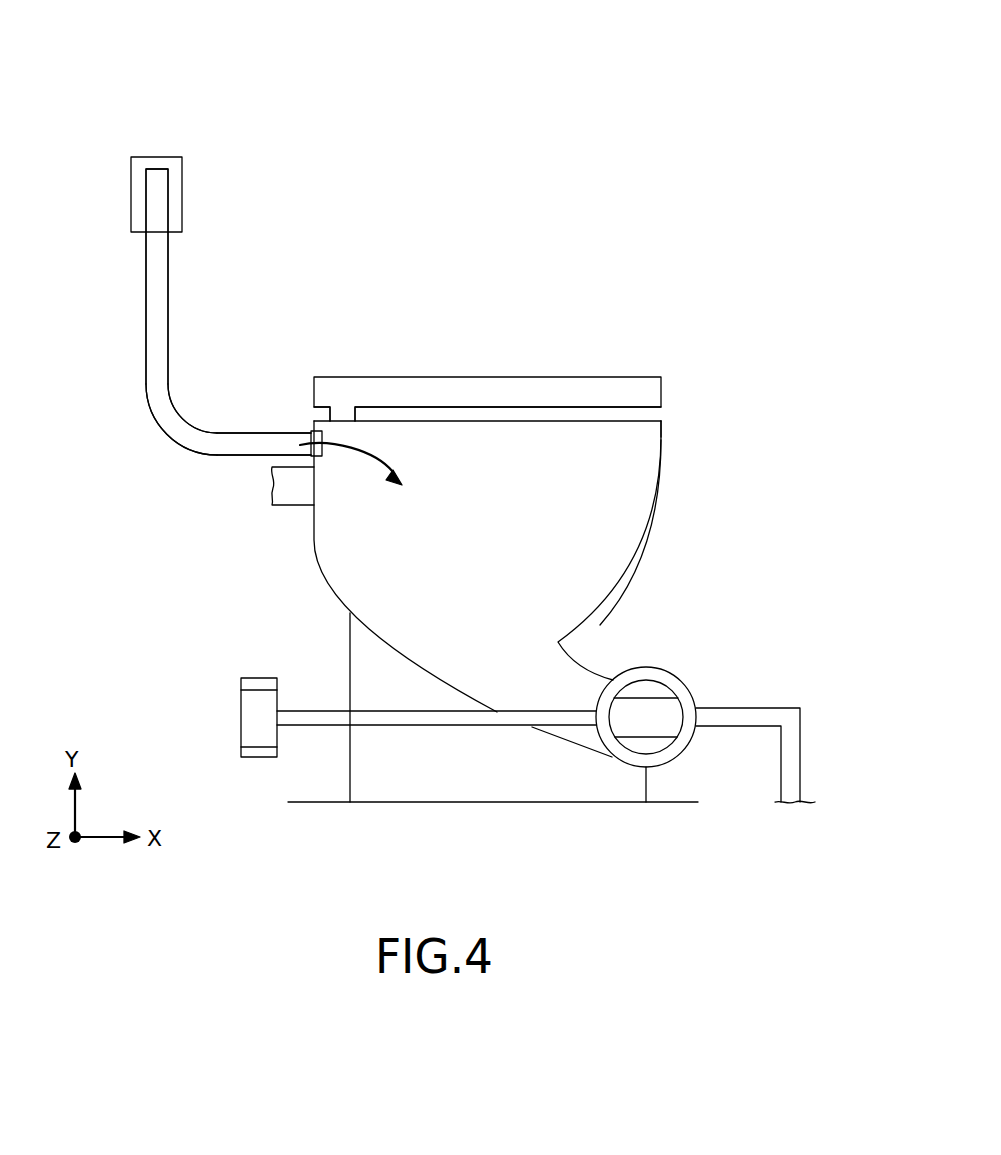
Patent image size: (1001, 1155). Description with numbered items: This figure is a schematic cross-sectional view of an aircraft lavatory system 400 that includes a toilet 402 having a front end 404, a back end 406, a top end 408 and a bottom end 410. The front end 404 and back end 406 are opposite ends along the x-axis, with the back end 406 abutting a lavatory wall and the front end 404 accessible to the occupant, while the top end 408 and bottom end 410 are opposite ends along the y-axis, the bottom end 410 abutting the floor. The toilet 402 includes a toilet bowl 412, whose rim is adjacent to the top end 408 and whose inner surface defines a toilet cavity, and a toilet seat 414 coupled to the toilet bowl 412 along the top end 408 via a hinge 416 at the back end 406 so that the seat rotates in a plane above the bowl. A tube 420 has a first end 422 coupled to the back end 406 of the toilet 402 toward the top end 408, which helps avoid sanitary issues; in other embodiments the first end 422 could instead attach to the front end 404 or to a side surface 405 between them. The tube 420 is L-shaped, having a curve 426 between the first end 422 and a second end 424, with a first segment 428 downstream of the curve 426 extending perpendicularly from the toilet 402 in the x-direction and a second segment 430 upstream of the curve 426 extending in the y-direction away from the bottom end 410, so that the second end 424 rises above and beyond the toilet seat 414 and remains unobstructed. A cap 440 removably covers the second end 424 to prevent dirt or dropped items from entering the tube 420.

The aircraft lavatory system 400 is at (96, 92).
The toilet 402 is at (756, 333).
The front end 404 is at (706, 404).
The side surface 405 is at (604, 470).
The back end 406 is at (263, 538).
The top end 408 is at (608, 345).
The bottom end 410 is at (398, 695).
The toilet bowl 412 is at (545, 490).
The toilet seat 414 is at (492, 377).
The hinge 416 is at (330, 414).
The tube 420 is at (143, 395).
The first end 422 is at (300, 445).
The second end 424 is at (160, 208).
The curve 426 is at (175, 438).
The first segment 428 is at (216, 432).
The second segment 430 is at (166, 316).
The cap 440 is at (172, 157).